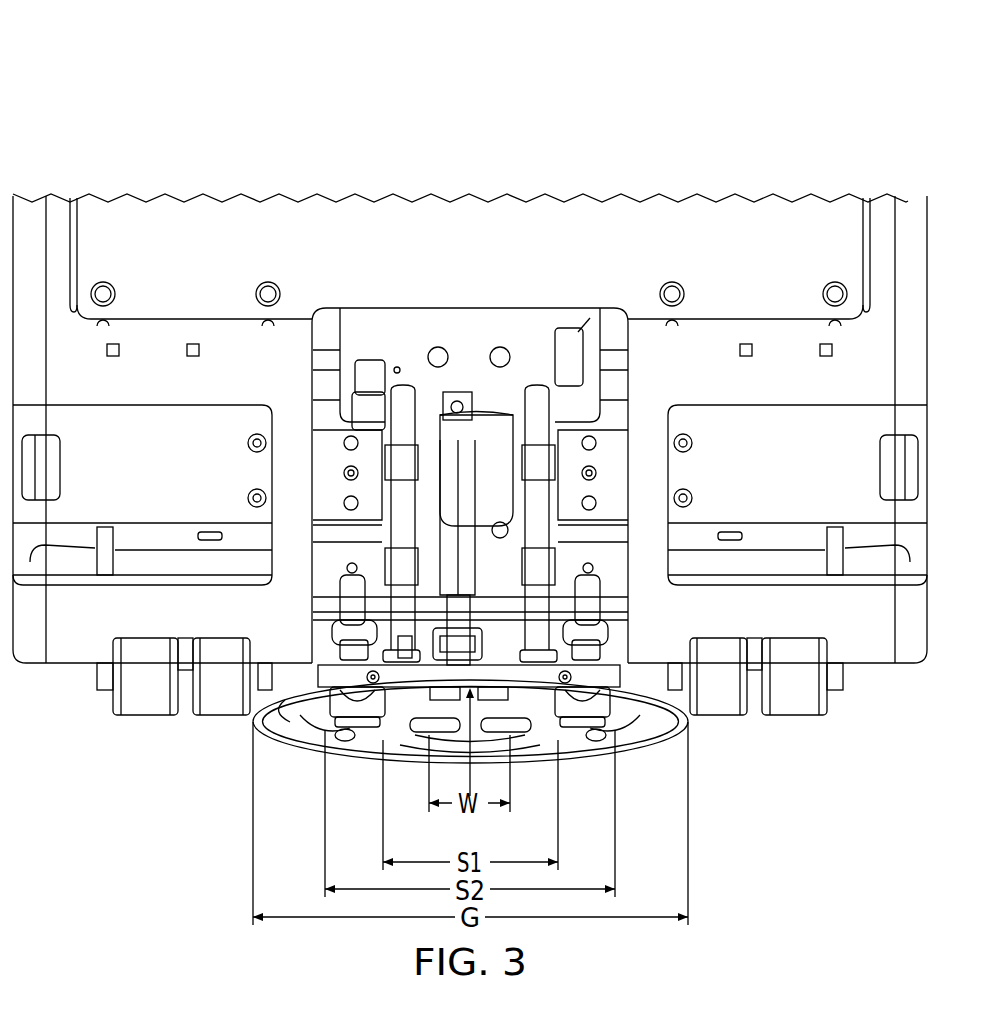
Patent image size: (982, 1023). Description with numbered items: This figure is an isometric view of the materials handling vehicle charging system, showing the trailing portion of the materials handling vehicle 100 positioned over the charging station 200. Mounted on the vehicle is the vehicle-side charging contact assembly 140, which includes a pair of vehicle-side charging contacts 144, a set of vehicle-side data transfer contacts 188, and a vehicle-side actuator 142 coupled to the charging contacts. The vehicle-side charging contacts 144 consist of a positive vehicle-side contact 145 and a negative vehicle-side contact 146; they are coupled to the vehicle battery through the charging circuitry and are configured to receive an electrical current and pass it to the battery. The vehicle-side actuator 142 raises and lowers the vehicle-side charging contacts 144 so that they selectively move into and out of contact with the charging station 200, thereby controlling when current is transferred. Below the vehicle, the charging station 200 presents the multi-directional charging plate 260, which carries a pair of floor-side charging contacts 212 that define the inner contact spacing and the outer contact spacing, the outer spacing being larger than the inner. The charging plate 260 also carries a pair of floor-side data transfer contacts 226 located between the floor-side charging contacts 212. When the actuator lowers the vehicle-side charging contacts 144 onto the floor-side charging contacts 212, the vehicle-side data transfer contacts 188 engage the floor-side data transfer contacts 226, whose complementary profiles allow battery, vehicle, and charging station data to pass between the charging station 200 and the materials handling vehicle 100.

The materials handling vehicle 100 is at (120, 104).
The vehicle-side charging contact assembly 140 is at (432, 320).
The vehicle-side actuator 142 is at (402, 618).
The vehicle-side charging contacts 144 is at (352, 742).
The positive vehicle-side contact 145 is at (650, 715).
The negative vehicle-side contact 146 is at (287, 713).
The vehicle-side data transfer contacts 188 is at (448, 687).
The charging station 200 is at (521, 753).
The floor-side charging contacts 212 is at (343, 735).
The floor-side data transfer contacts 226 is at (437, 727).
The multi-directional charging plate 260 is at (388, 755).